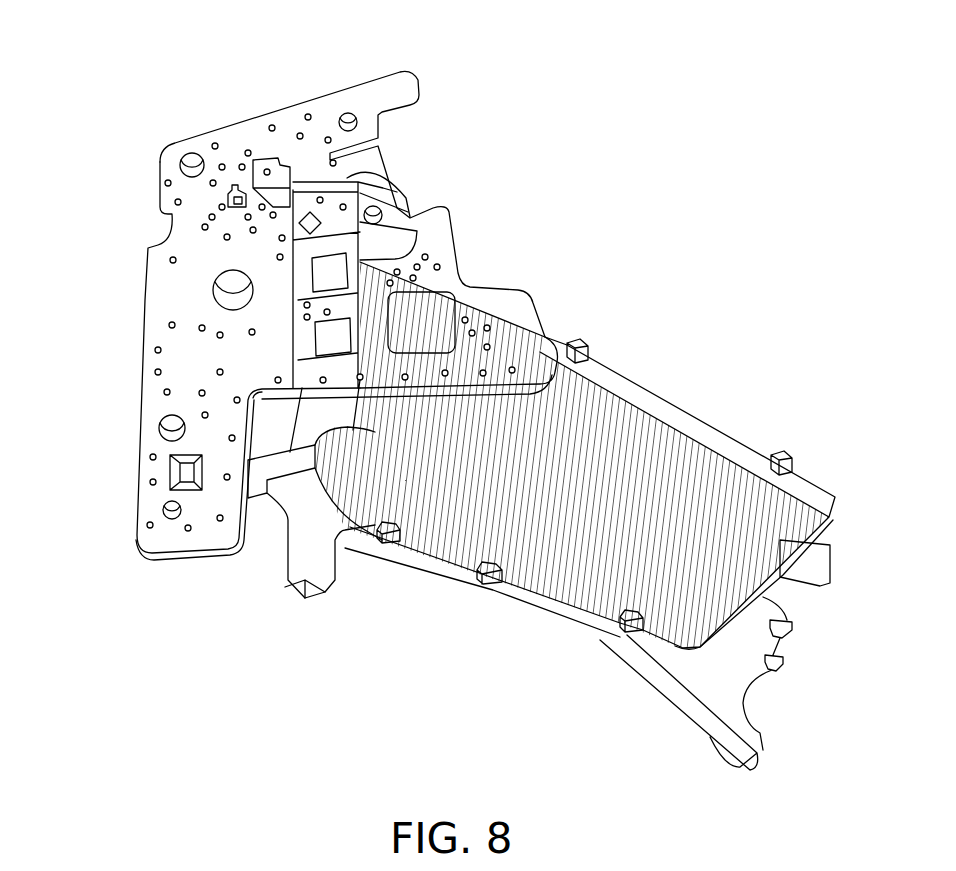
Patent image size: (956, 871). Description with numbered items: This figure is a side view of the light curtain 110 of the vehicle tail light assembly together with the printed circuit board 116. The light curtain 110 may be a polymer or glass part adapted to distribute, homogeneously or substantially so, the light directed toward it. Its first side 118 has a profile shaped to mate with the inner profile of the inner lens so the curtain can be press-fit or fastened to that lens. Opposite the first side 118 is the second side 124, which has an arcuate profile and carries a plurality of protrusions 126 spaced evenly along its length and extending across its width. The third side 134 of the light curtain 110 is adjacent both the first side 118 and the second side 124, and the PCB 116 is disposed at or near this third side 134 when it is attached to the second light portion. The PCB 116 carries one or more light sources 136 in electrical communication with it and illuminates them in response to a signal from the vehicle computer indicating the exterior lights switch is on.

The light curtain 110 is at (130, 72).
The printed circuit board 116 is at (284, 105).
The first side 118 is at (500, 606).
The second side 124 is at (707, 470).
The protrusions 126 is at (560, 417).
The third side 134 is at (352, 372).
The light sources 136 is at (330, 277).